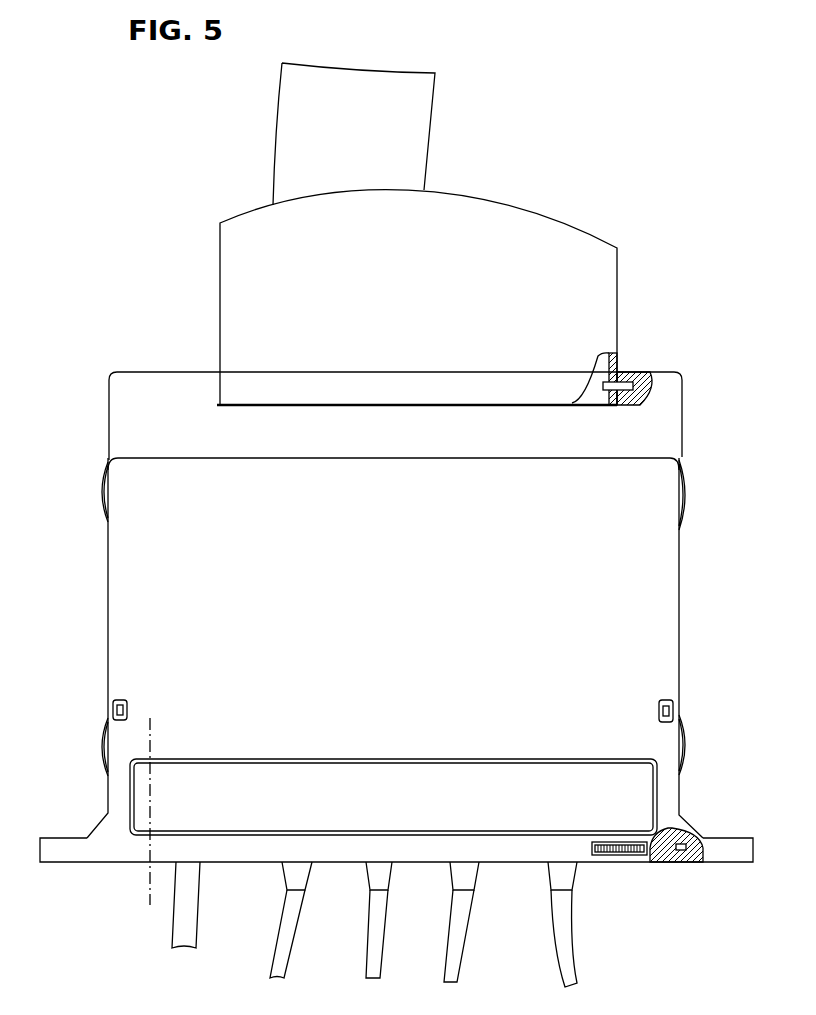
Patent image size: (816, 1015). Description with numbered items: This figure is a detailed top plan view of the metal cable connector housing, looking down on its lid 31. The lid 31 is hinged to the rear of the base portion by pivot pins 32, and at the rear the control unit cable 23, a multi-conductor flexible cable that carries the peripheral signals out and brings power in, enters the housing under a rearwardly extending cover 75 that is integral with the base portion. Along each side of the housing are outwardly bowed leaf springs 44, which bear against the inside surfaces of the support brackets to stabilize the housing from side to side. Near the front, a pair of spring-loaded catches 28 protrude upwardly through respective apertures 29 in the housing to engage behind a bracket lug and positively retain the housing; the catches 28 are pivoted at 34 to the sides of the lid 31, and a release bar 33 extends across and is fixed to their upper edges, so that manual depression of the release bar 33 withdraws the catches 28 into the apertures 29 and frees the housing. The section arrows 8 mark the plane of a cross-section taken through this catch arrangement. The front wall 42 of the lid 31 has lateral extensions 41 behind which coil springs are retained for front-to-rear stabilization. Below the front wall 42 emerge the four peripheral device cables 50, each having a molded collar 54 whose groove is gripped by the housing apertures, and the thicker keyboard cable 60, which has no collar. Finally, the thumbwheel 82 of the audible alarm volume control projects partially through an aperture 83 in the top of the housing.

The control unit cable 23 is at (420, 118).
The cover 75 is at (580, 242).
The pivot pins 32 is at (606, 386).
The lid 31 is at (673, 620).
The leaf springs 44 is at (103, 500).
The catches 28 is at (113, 708).
The apertures 29 is at (128, 705).
The release bar 33 is at (362, 770).
The section line 8 is at (150, 740).
The lateral extensions 41 is at (55, 845).
The front wall 42 is at (258, 855).
The thumbwheel 82 is at (613, 843).
The aperture 83 is at (598, 843).
The pivot 34 is at (690, 855).
The cable 60 is at (175, 928).
The collar 54 is at (305, 880).
The peripheral device cables 50 is at (372, 955).